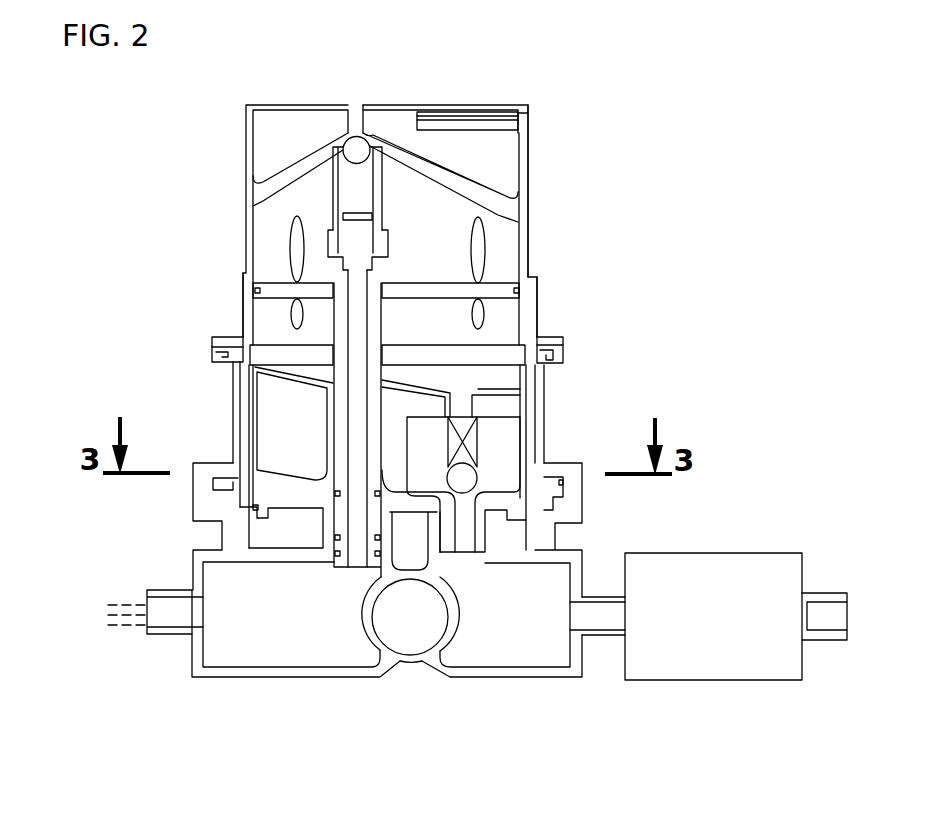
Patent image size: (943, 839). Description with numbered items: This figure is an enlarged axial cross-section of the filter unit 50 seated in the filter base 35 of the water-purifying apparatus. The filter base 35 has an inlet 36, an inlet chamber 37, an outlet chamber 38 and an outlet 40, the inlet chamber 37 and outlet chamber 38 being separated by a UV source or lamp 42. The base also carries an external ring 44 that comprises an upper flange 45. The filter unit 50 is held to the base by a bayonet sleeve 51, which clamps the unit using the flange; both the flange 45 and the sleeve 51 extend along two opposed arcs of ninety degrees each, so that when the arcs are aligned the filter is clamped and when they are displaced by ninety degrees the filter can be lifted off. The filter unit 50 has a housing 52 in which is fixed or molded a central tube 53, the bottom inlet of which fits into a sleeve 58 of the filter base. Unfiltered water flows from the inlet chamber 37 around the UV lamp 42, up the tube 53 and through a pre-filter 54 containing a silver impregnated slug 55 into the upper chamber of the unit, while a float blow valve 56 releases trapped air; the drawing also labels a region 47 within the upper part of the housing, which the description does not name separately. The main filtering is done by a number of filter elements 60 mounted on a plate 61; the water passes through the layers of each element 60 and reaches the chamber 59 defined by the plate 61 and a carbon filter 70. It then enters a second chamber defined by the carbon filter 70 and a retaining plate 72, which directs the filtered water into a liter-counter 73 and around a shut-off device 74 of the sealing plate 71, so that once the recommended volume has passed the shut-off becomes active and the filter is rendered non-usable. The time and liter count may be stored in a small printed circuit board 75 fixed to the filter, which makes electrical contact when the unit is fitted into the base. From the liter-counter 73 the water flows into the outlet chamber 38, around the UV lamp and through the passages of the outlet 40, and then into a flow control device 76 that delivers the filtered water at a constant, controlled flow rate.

The filter base 35 is at (238, 680).
The inlet 36 is at (167, 617).
The inlet chamber 37 is at (278, 642).
The outlet chamber 38 is at (512, 647).
The outlet 40 is at (598, 617).
The UV source or lamp 42 is at (412, 643).
The external ring 44 is at (573, 513).
The upper flange 45 is at (562, 484).
The upper chamber 47 is at (437, 195).
The filter unit 50 is at (402, 105).
The bayonet sleeve 51 is at (563, 493).
The housing 52 is at (532, 236).
The central tube 53 is at (372, 330).
The pre-filter 54 is at (337, 217).
The silver impregnated slug 55 is at (357, 212).
The float blow valve 56 is at (355, 147).
The sleeve 58 is at (322, 530).
The chamber 59 is at (505, 327).
The filter elements 60 is at (482, 225).
The plate 61 is at (270, 289).
The carbon filter 70 is at (262, 357).
The sealing plate 71 is at (258, 491).
The retaining plate 72 is at (497, 397).
The liter-counter 73 is at (503, 434).
The shut-off device 74 is at (466, 478).
The printed circuit board 75 is at (477, 113).
The flow control device 76 is at (718, 668).